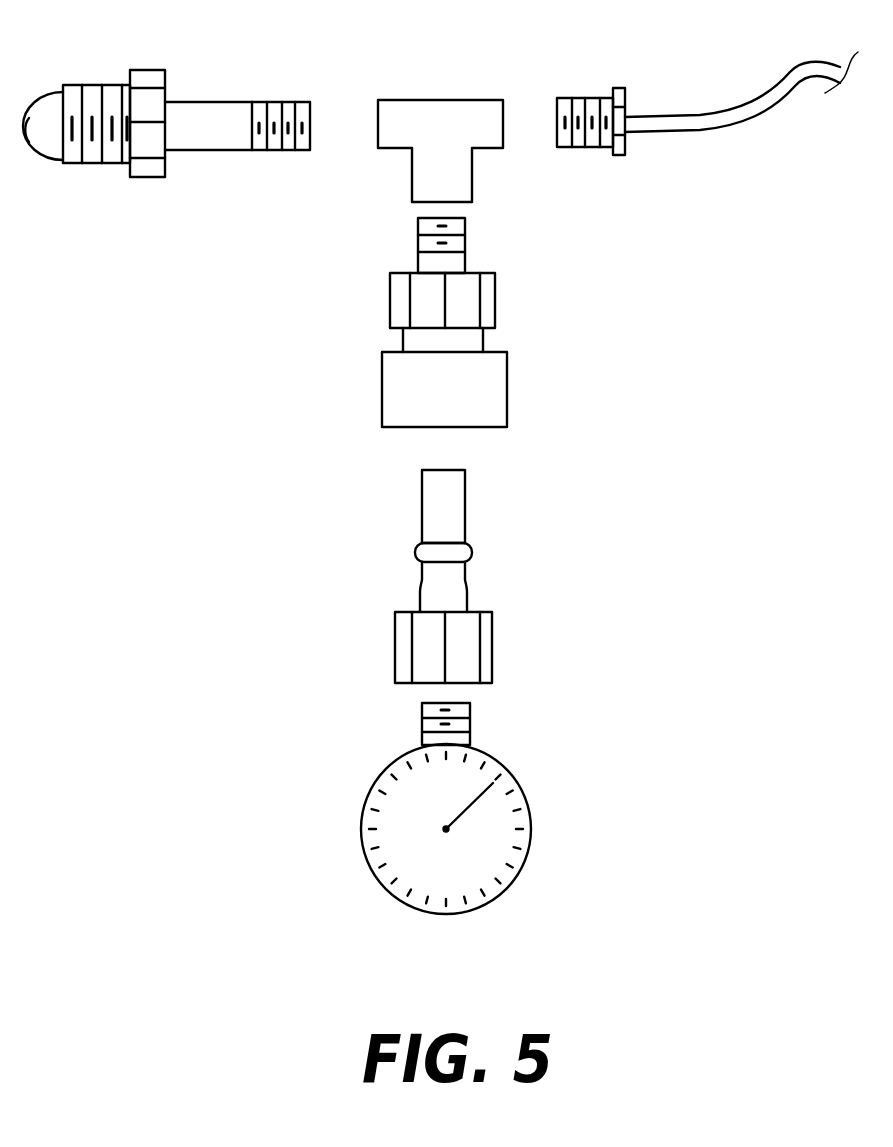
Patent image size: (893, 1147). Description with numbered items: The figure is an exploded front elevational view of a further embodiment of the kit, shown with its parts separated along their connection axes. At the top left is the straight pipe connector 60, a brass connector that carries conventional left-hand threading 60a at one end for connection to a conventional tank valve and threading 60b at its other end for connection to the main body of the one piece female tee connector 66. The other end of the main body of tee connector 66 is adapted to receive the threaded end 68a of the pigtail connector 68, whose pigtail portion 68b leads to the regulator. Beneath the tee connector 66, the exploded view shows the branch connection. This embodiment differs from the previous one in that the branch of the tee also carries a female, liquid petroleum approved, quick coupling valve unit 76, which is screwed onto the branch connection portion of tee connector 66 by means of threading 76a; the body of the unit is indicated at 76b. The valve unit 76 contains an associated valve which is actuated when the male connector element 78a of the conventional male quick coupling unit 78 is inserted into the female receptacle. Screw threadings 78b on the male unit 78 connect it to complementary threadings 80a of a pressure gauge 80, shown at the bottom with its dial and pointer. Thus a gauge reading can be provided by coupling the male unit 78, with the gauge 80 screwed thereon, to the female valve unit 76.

The straight pipe connector 60 is at (191, 92).
The left-hand threading 60a is at (90, 85).
The threading 60b is at (297, 100).
The tee connector 66 is at (445, 110).
The pigtail connector 68 is at (707, 87).
The threaded end 68a is at (583, 100).
The pigtail portion 68b is at (747, 112).
The quick coupling valve unit 76 is at (495, 318).
The threading 76a is at (467, 232).
The fitting lower body 76b is at (490, 385).
The male quick coupling unit 78 is at (512, 607).
The male connector element 78a is at (457, 505).
The screw threadings 78b is at (488, 683).
The pressure gauge 80 is at (495, 818).
The complementary threadings 80a is at (472, 723).